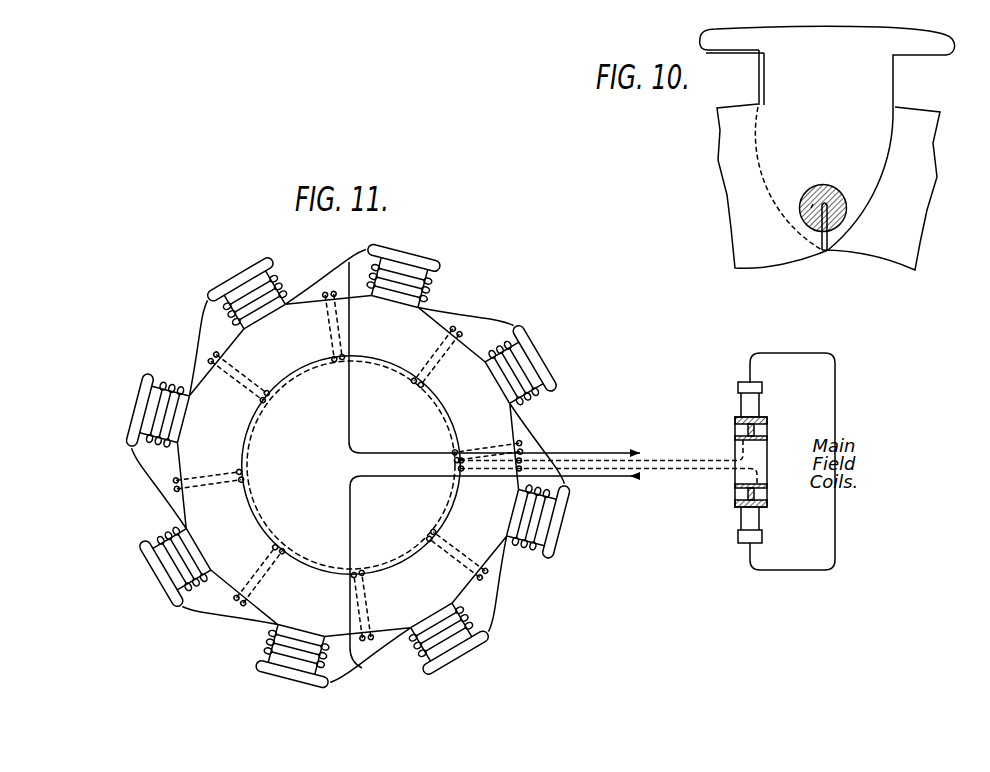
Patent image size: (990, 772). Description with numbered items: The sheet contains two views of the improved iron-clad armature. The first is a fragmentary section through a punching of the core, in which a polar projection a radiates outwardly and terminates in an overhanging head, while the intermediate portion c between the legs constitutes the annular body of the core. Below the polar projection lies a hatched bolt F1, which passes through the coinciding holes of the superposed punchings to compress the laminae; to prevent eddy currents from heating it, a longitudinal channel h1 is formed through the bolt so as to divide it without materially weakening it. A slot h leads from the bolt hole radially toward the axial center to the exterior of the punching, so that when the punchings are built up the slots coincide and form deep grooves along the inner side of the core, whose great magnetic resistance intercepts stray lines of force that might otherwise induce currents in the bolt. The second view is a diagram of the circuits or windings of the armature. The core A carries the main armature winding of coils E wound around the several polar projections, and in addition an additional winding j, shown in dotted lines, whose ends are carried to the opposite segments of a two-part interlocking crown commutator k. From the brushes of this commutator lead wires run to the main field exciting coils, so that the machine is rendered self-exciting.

In FIG. 11, the armature coils E is at (276, 282).
In FIG. 11, the laminated iron core A is at (348, 466).
In FIG. 11, the additional winding j is at (228, 384).
In FIG. 11, the two-part interlocking crown commutator k is at (735, 441).
In FIG. 10, the polar projection a is at (827, 138).
In FIG. 10, the conductor F1 is at (838, 196).
In FIG. 10, the slot lining h1 is at (814, 207).
In FIG. 10, the intermediate portion c is at (828, 187).
In FIG. 10, the slot h is at (827, 250).